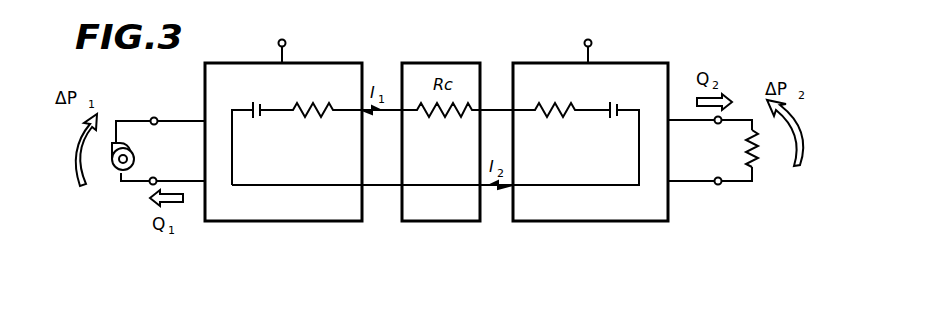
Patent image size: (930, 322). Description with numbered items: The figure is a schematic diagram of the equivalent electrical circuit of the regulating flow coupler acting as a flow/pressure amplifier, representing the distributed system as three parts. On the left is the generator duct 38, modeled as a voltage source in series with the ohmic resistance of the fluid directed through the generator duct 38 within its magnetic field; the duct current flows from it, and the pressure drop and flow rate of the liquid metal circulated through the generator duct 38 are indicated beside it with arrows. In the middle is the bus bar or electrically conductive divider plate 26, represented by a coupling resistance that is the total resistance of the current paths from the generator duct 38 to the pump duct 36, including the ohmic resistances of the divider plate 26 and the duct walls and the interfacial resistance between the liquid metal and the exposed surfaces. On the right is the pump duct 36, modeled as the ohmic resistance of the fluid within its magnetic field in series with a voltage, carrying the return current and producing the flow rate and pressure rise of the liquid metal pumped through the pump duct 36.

The generator duct 38 is at (367, 231).
The divider plate 26 is at (484, 232).
The pump duct 36 is at (672, 232).